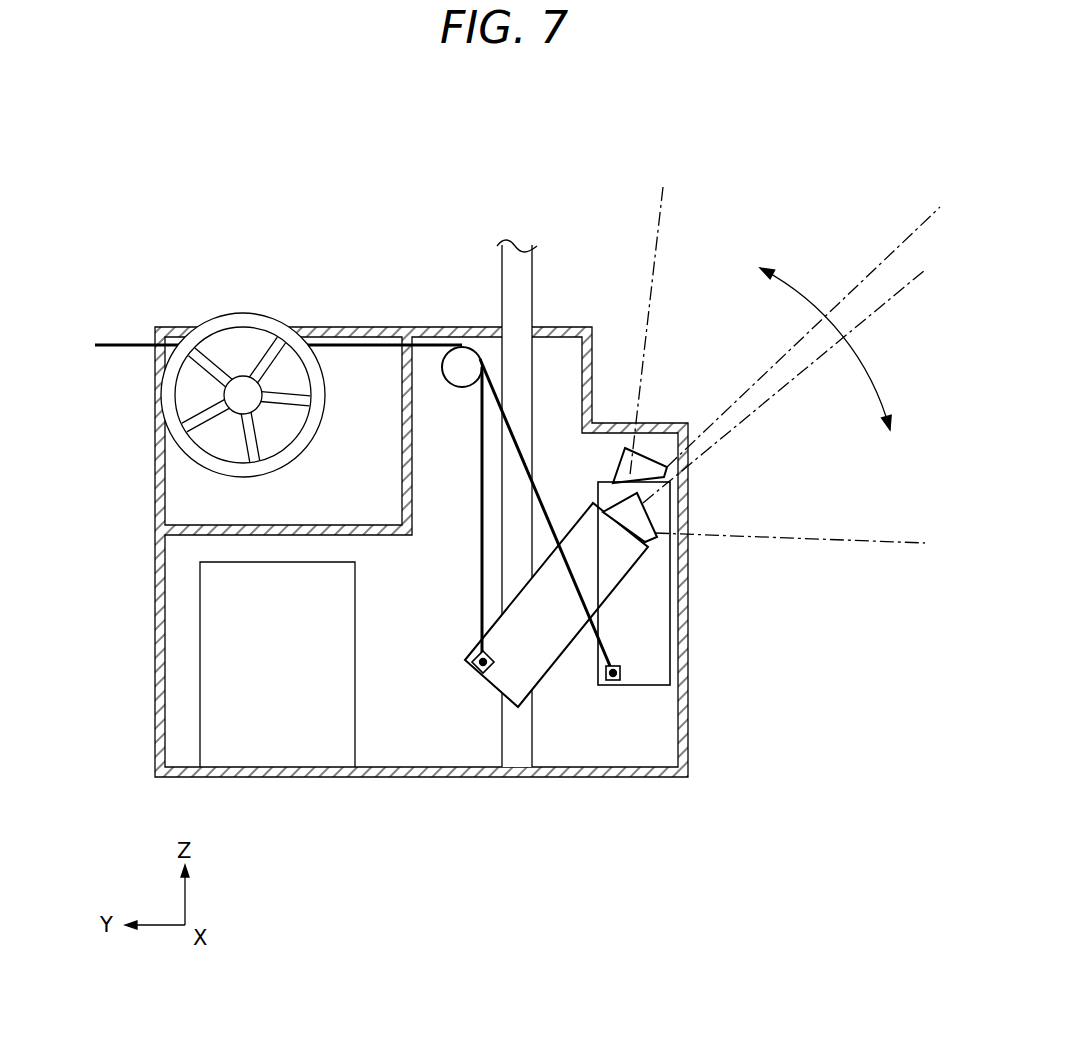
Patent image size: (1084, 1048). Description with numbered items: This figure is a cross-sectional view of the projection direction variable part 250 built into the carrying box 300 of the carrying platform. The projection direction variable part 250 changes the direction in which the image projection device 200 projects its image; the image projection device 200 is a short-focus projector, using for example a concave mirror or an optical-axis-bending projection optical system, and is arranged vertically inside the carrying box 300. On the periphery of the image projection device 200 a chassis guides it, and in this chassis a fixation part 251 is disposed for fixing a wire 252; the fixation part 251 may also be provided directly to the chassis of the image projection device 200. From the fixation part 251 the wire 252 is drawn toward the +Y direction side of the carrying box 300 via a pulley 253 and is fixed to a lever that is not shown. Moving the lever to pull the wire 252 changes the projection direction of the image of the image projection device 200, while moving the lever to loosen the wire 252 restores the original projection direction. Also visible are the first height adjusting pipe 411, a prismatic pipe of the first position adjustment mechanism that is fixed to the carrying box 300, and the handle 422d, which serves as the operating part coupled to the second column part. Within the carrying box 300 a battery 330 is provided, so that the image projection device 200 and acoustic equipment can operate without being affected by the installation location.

The image projection device 200 is at (502, 677).
The projection direction variable part 250 is at (820, 108).
The fixation part 251 is at (471, 665).
The wire 252 is at (546, 518).
The pulley 253 is at (453, 367).
The carrying box 300 is at (155, 582).
The battery 330 is at (276, 757).
The first height adjusting pipe 411 is at (532, 283).
The handle 422d is at (250, 312).